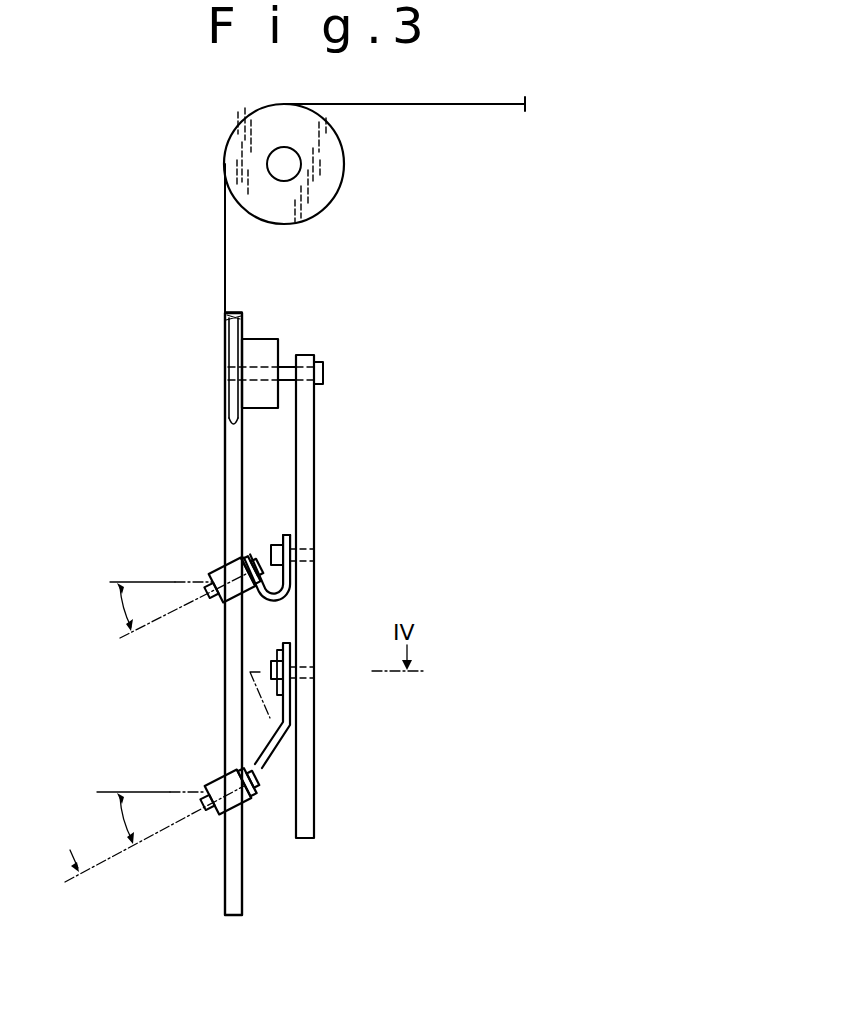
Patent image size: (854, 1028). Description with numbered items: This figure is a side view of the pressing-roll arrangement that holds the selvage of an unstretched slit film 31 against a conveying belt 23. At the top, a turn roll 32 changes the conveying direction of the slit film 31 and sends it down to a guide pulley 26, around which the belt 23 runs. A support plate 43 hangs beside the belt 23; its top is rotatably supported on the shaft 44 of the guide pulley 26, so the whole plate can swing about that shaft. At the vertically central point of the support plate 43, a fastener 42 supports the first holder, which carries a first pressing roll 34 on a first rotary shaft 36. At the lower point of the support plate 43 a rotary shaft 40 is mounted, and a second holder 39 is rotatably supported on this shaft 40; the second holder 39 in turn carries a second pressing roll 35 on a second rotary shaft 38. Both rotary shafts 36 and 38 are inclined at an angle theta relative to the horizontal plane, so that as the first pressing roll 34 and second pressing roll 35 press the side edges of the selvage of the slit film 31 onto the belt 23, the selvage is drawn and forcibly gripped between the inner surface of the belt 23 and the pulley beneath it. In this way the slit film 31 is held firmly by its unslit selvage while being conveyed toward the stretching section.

The unstretched slit film 31 is at (225, 252).
The turn roll 32 is at (344, 166).
The belt 23 is at (242, 470).
The guide pulley 26 is at (258, 339).
The support plate 43 is at (314, 522).
The shaft of the guide pulley 44 is at (325, 373).
The first pressing roll 34 is at (215, 563).
The first rotary shaft 36 is at (190, 612).
The fastener 42 is at (272, 543).
The second pressing roll 35 is at (215, 775).
The second rotary shaft 38 is at (205, 808).
The second holder 39 is at (290, 712).
The rotary shaft 40 is at (271, 668).